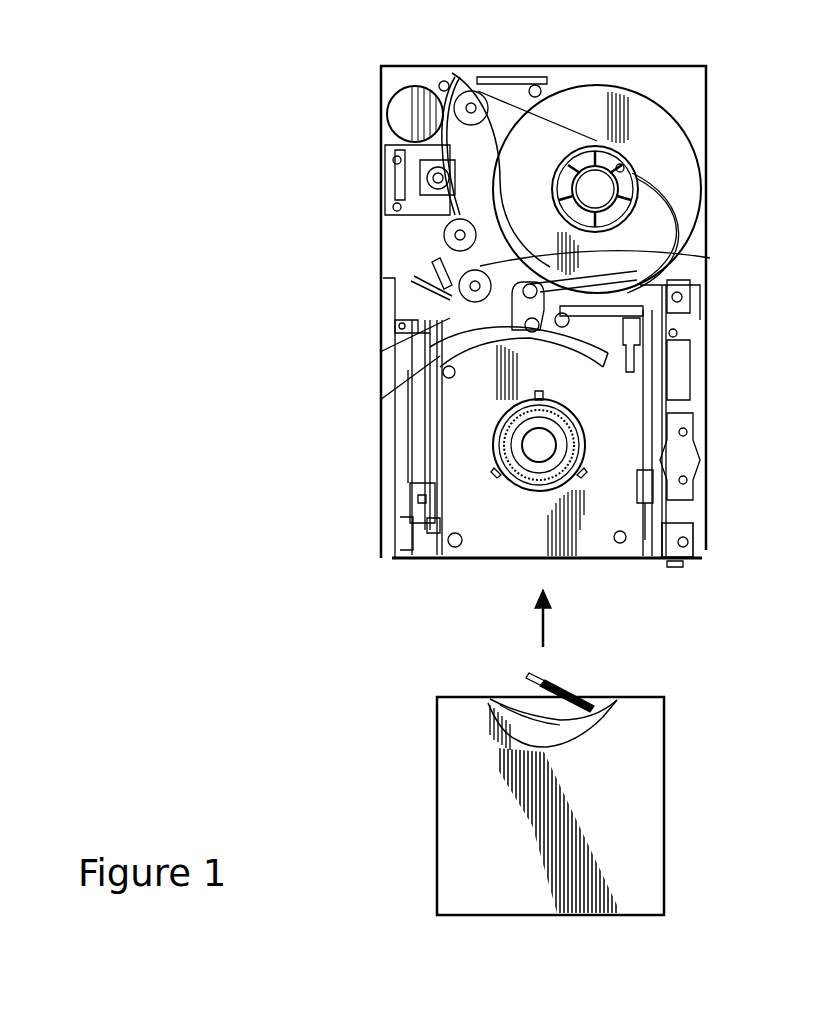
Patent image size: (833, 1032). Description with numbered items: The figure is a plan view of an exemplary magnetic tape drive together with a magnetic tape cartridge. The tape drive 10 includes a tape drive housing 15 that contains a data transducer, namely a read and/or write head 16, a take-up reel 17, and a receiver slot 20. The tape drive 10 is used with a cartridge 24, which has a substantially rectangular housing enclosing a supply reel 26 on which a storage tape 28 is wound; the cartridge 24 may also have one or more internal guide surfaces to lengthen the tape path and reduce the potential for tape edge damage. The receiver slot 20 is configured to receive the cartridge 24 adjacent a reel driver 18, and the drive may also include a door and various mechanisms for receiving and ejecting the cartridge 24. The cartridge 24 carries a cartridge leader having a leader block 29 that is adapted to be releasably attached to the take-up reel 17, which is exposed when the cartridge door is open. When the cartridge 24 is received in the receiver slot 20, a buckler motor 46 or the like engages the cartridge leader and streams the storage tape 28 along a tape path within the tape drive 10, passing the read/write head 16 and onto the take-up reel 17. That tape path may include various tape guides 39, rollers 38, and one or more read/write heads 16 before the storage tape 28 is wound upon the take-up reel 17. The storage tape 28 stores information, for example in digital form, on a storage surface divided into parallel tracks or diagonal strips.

The tape drive 10 is at (722, 280).
The tape drive housing 15 is at (710, 357).
The read/write head 16 is at (425, 187).
The take-up reel 17 is at (678, 152).
The reel driver 18 is at (490, 452).
The receiver slot 20 is at (630, 553).
The cartridge 24 is at (664, 762).
The supply reel 26 is at (520, 703).
The storage tape 28 is at (557, 688).
The leader block 29 is at (532, 680).
The rollers 38 is at (410, 292).
The tape guides 39 is at (480, 77).
The buckler motor 46 is at (380, 352).